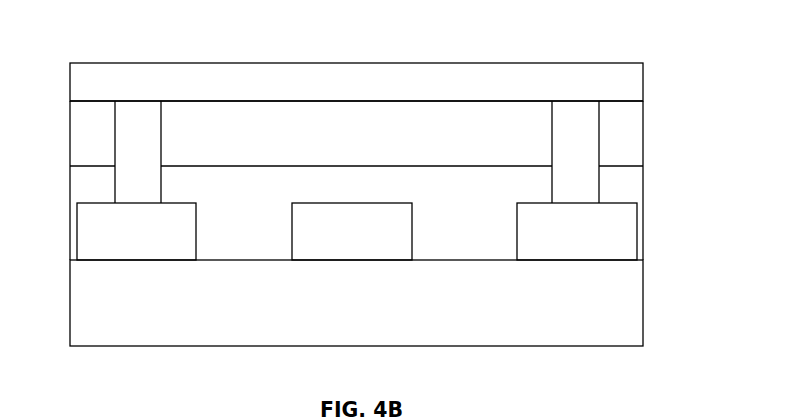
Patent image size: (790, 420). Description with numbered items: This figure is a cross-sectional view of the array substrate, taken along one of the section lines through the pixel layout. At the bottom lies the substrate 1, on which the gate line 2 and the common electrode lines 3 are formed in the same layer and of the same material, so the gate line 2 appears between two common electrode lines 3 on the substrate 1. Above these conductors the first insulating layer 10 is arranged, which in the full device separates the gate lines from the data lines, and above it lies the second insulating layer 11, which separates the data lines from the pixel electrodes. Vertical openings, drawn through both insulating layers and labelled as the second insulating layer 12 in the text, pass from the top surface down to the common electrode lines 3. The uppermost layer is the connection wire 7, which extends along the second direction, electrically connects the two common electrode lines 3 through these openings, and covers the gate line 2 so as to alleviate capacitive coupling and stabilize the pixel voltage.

The substrate 1 is at (643, 309).
The gate lines 2 is at (414, 222).
The common electrode lines 3 is at (77, 230).
The connection wire 7 is at (378, 63).
The first insulating layer 10 is at (643, 182).
The second insulating layer 11 is at (643, 116).
The second insulating layer 12 is at (138, 112).